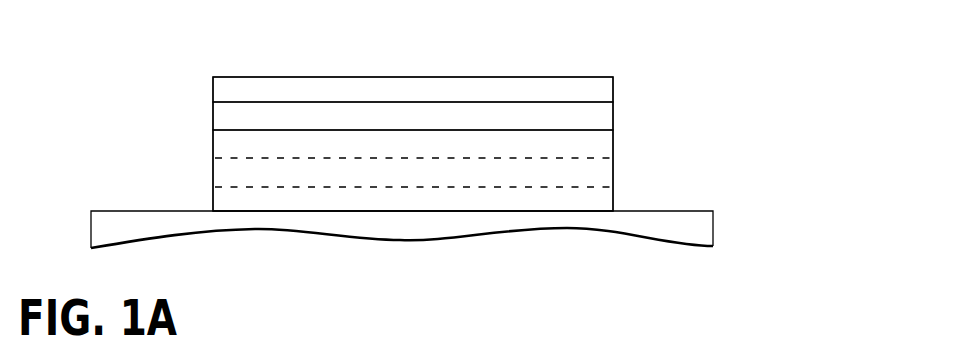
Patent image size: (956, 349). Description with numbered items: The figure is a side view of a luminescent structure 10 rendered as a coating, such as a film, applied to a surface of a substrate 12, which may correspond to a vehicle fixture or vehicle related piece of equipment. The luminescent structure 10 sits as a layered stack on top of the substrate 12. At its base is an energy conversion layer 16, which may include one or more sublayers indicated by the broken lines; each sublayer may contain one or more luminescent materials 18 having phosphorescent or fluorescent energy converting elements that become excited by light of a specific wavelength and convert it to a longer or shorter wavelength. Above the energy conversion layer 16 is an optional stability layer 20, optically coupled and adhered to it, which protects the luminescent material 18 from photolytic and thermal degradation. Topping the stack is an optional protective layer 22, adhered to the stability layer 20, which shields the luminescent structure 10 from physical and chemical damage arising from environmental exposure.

The luminescent structure 10 is at (553, 51).
The substrate 12 is at (657, 211).
The energy conversion layer 16 is at (213, 170).
The luminescent material 18 is at (569, 171).
The stability layer 20 is at (213, 116).
The protective layer 22 is at (300, 77).